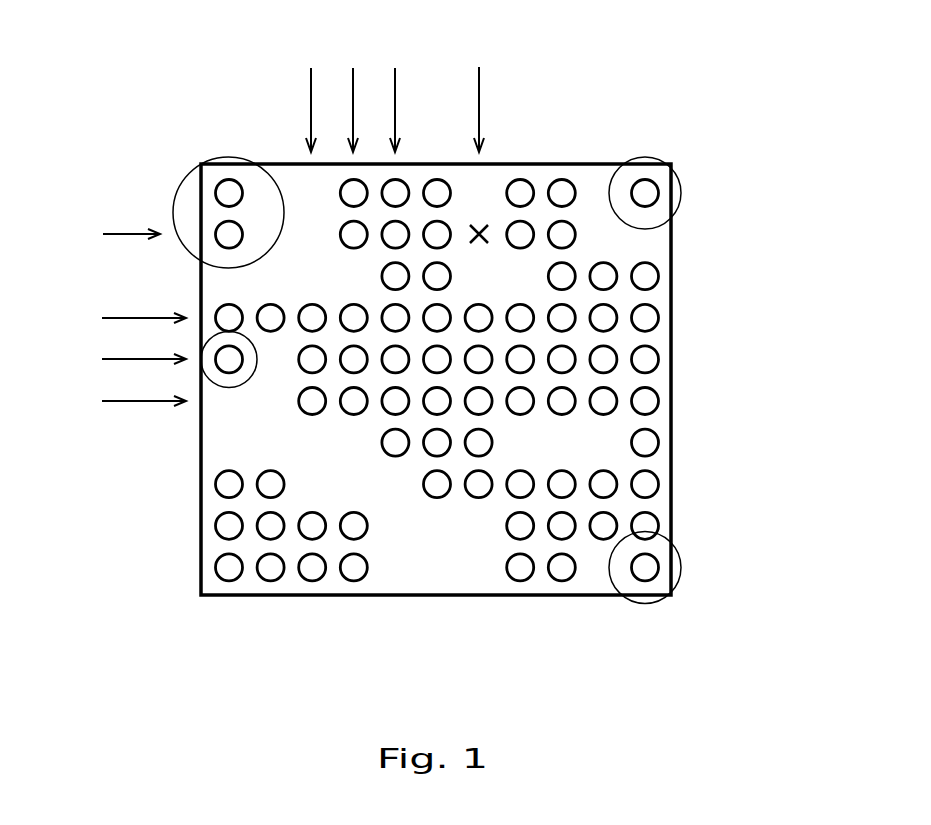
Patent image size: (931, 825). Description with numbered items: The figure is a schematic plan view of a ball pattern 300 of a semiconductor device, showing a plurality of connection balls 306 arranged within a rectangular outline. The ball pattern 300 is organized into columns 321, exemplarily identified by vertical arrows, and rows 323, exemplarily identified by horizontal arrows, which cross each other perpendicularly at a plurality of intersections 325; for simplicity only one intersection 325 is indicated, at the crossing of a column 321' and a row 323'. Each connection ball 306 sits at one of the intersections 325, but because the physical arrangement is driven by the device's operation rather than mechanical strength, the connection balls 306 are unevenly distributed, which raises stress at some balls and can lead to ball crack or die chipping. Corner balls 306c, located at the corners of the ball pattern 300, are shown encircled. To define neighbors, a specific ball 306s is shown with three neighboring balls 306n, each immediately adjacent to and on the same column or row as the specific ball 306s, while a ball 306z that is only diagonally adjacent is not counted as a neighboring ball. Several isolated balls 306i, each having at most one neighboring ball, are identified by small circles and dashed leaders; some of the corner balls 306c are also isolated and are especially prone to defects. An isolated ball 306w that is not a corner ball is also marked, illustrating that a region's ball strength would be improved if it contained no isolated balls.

The ball pattern 300 is at (214, 66).
The connection balls 306 is at (650, 318).
The corner balls 306c is at (211, 193).
The isolated ball 306w is at (233, 393).
The neighboring balls 306n is at (299, 511).
The ball 306z is at (257, 539).
The specific ball 306s is at (312, 586).
The isolated balls 306i is at (633, 210).
The intersections 325 is at (479, 222).
The columns 321 is at (353, 80).
The column 321' is at (481, 94).
The rows 323 is at (107, 359).
The row 323' is at (106, 234).